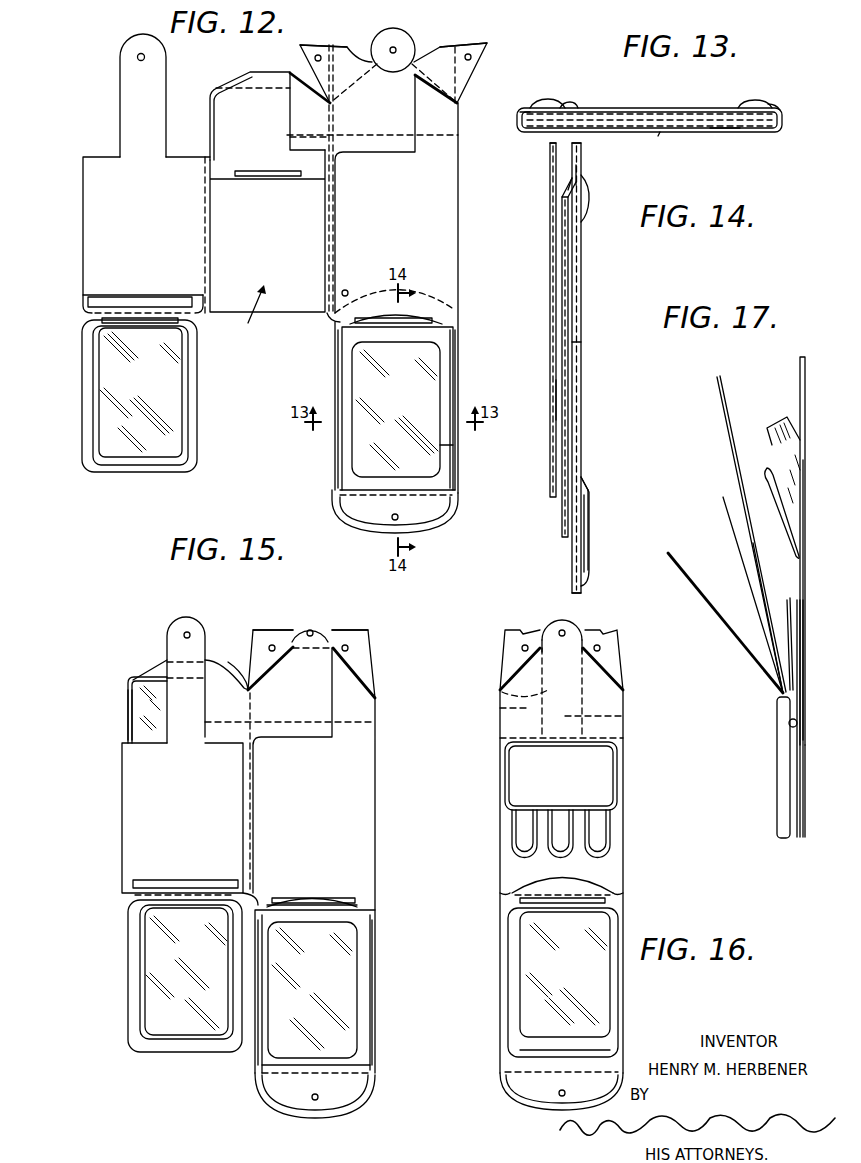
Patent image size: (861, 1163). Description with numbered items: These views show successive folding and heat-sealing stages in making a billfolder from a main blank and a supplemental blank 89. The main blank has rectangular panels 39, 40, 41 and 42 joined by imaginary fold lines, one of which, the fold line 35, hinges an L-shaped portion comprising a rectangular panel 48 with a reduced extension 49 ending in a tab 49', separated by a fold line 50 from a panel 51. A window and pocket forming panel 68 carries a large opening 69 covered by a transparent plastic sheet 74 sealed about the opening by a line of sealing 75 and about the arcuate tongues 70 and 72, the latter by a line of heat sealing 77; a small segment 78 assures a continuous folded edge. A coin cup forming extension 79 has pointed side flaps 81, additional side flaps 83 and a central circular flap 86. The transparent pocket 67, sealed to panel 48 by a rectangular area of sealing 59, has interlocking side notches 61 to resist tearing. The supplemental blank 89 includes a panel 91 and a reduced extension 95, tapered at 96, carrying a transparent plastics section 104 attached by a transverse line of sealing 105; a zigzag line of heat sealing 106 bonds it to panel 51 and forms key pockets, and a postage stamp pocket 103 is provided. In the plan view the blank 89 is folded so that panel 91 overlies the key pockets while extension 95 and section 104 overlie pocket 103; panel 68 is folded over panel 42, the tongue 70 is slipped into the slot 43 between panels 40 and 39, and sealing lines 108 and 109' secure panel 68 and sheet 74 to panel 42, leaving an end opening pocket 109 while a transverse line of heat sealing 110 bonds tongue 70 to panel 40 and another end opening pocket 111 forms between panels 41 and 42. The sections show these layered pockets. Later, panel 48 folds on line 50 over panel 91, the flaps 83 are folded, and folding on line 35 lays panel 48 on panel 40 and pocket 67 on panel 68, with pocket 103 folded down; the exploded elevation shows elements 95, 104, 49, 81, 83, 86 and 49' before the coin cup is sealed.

In FIG. 15, the fold line 35 is at (253, 825).
In FIG. 17, the panel 39 is at (805, 645).
In FIG. 12, the panel 40 is at (398, 221).
In FIG. 14, the panel 40 is at (581, 150).
In FIG. 17, the panel 40 is at (797, 724).
In FIG. 15, the panel 40 is at (313, 821).
In FIG. 13, the panel 41 is at (672, 132).
In FIG. 14, the panel 41 is at (550, 330).
In FIG. 13, the panel 42 is at (660, 133).
In FIG. 14, the panel 42 is at (582, 343).
In FIG. 12, the slot 43 is at (355, 297).
In FIG. 14, the slot 43 is at (552, 150).
In FIG. 15, the slot 43 is at (294, 902).
In FIG. 12, the rectangular panel 48 is at (136, 241).
In FIG. 17, the rectangular panel 48 is at (800, 782).
In FIG. 15, the rectangular panel 48 is at (184, 823).
In FIG. 12, the reduced rectangular extension 49 is at (118, 95).
In FIG. 17, the reduced rectangular extension 49 is at (756, 525).
In FIG. 15, the reduced rectangular extension 49 is at (186, 680).
In FIG. 16, the reduced rectangular extension 49 is at (588, 693).
In FIG. 12, the tab 49' is at (167, 63).
In FIG. 15, the tab 49' is at (196, 615).
In FIG. 16, the tab 49' is at (547, 624).
In FIG. 12, the fold line 50 is at (203, 190).
In FIG. 17, the panel 51 is at (777, 763).
In FIG. 16, the panel 51 is at (590, 868).
In FIG. 15, the rectangular area of sealing 59 is at (176, 880).
In FIG. 16, the side notches 61 is at (510, 893).
In FIG. 12, the pocket 67 is at (116, 469).
In FIG. 15, the pocket 67 is at (163, 1054).
In FIG. 16, the pocket 67 is at (592, 991).
In FIG. 12, the window and pocket forming panel 68 is at (445, 486).
In FIG. 13, the window and pocket forming panel 68 is at (552, 99).
In FIG. 14, the window and pocket forming panel 68 is at (586, 515).
In FIG. 15, the window and pocket forming panel 68 is at (365, 1060).
In FIG. 16, the window and pocket forming panel 68 is at (505, 1050).
In FIG. 13, the opening 69 is at (746, 103).
In FIG. 14, the opening 69 is at (585, 216).
In FIG. 12, the arcuate tongue 70 is at (428, 296).
In FIG. 14, the arcuate tongue 70 is at (582, 170).
In FIG. 12, the arcuate tongue 72 is at (372, 515).
In FIG. 14, the arcuate tongue 72 is at (589, 535).
In FIG. 15, the arcuate tongue 72 is at (292, 1097).
In FIG. 16, the arcuate tongue 72 is at (530, 1090).
In FIG. 12, the sheet of transparent heat sealable plastic material 74 is at (394, 406).
In FIG. 13, the sheet of transparent heat sealable plastic material 74 is at (672, 108).
In FIG. 14, the sheet of transparent heat sealable plastic material 74 is at (582, 324).
In FIG. 15, the sheet of transparent heat sealable plastic material 74 is at (318, 1005).
In FIG. 12, the line of sealing 75 is at (440, 450).
In FIG. 13, the line of sealing 75 is at (570, 101).
In FIG. 14, the line of sealing 75 is at (583, 480).
In FIG. 14, the line of heat sealing 77 is at (572, 590).
In FIG. 12, the small segment 78 is at (330, 317).
In FIG. 15, the small segment 78 is at (258, 903).
In FIG. 12, the coin cup forming extension 79 is at (378, 104).
In FIG. 17, the coin cup forming extension 79 is at (806, 460).
In FIG. 15, the coin cup forming extension 79 is at (310, 697).
In FIG. 12, the pointed side flaps 81 is at (290, 100).
In FIG. 17, the pointed side flaps 81 is at (768, 475).
In FIG. 15, the pointed side flaps 81 is at (225, 672).
In FIG. 16, the pointed side flaps 81 is at (500, 708).
In FIG. 12, the side flaps 83 is at (322, 42).
In FIG. 17, the side flaps 83 is at (780, 425).
In FIG. 15, the side flaps 83 is at (262, 630).
In FIG. 16, the side flaps 83 is at (505, 651).
In FIG. 12, the central circularly formed flap 86 is at (397, 30).
In FIG. 17, the central circularly formed flap 86 is at (822, 345).
In FIG. 15, the central circularly formed flap 86 is at (316, 616).
In FIG. 16, the central circularly formed flap 86 is at (580, 620).
In FIG. 12, the supplemental blank 89 is at (247, 317).
In FIG. 12, the panel 91 is at (272, 253).
In FIG. 17, the reduced extension 95 is at (736, 542).
In FIG. 16, the reduced extension 95 is at (540, 690).
In FIG. 15, the taper 96 is at (150, 677).
In FIG. 17, the pocket 103 is at (704, 602).
In FIG. 15, the pocket 103 is at (128, 692).
In FIG. 16, the pocket 103 is at (598, 791).
In FIG. 12, the transparent all-plastics section 104 is at (271, 136).
In FIG. 17, the transparent all-plastics section 104 is at (762, 567).
In FIG. 15, the transparent all-plastics section 104 is at (140, 712).
In FIG. 12, the transverse line of sealing 105 is at (271, 178).
In FIG. 16, the zigzag line of heat sealing 106 is at (608, 832).
In FIG. 12, the line of sealing 108 is at (435, 322).
In FIG. 14, the line of sealing 108 is at (570, 180).
In FIG. 15, the line of sealing 108 is at (360, 905).
In FIG. 13, the end opening pocket 109 is at (649, 86).
In FIG. 14, the end opening pocket 109 is at (547, 362).
In FIG. 12, the lines of sealing 109' is at (388, 410).
In FIG. 13, the lines of sealing 109' is at (653, 85).
In FIG. 15, the lines of sealing 109' is at (311, 1002).
In FIG. 12, the transverse line of heat sealing 110 is at (356, 323).
In FIG. 15, the transverse line of heat sealing 110 is at (318, 894).
In FIG. 13, the end opening pocket 111 is at (712, 131).
In FIG. 14, the end opening pocket 111 is at (553, 430).